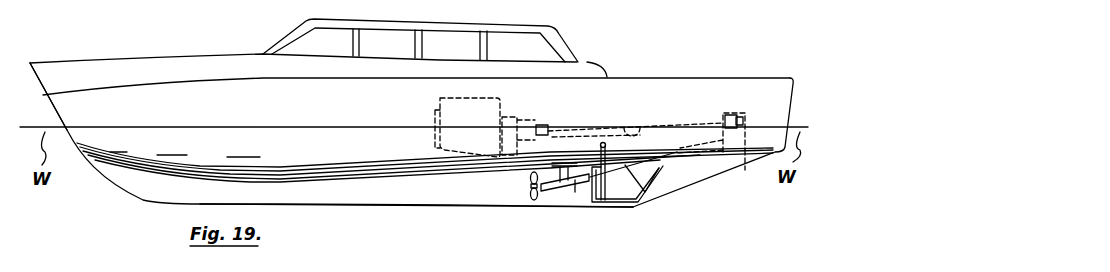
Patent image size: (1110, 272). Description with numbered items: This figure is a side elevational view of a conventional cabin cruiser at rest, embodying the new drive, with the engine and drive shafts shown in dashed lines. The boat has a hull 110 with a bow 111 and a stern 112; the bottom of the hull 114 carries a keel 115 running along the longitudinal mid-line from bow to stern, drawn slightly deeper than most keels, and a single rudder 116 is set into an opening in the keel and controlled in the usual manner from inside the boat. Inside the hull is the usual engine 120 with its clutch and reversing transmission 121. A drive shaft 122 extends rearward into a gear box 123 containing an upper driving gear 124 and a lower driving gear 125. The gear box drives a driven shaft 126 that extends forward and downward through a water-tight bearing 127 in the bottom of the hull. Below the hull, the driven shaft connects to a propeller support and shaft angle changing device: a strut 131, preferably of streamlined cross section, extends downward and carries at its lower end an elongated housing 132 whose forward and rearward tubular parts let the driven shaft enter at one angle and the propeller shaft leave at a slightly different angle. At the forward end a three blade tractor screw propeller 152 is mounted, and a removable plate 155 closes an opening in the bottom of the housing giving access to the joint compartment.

The hull 110 is at (313, 157).
The bow 111 is at (55, 110).
The stern 112 is at (797, 78).
The bottom of the hull 114 is at (350, 170).
The keel 115 is at (428, 195).
The rudder 116 is at (618, 188).
The engine 120 is at (438, 100).
The clutch and reversing transmission 121 is at (531, 126).
The drive shaft 122 is at (653, 111).
The gear box 123 is at (730, 114).
The upper driving gear 124 is at (742, 116).
The lower driving gear 125 is at (720, 160).
The driven shaft 126 is at (645, 178).
The water-tight bearing 127 is at (673, 157).
The strut 131 is at (553, 175).
The elongated housing 132 is at (553, 194).
The three blade tractor screw propeller 152 is at (533, 198).
The removable plate 155 is at (575, 192).